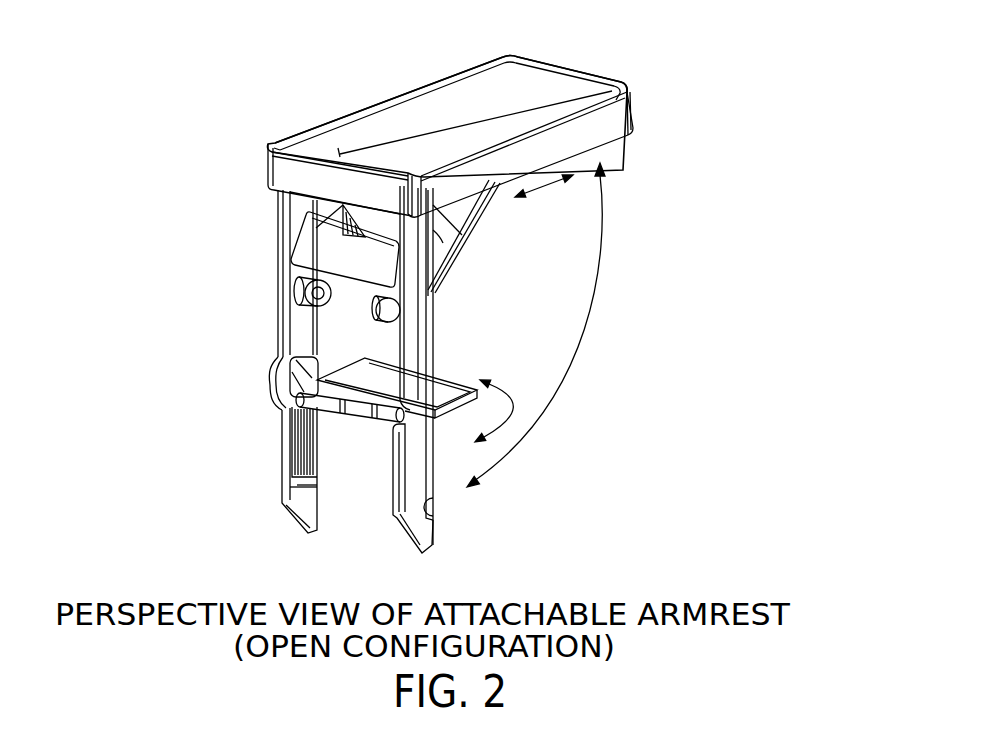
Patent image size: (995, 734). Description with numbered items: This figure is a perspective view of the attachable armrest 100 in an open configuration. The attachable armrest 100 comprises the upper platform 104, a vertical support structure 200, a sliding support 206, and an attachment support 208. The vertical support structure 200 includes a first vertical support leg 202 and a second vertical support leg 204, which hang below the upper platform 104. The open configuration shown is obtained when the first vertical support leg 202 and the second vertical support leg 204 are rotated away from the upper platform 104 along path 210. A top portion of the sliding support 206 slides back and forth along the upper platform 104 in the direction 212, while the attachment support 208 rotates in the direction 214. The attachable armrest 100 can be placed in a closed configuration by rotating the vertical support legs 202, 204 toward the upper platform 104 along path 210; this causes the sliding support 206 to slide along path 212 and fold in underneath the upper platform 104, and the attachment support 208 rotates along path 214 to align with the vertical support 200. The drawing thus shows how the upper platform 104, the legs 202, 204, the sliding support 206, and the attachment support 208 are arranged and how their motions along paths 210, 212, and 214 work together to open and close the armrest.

The attachable armrest 100 is at (222, 104).
The upper platform 104 is at (577, 80).
The vertical support structure 200 is at (280, 257).
The first vertical support leg 202 is at (287, 512).
The second vertical support leg 204 is at (418, 532).
The sliding support 206 is at (468, 210).
The attachment support 208 is at (495, 360).
The path 210 is at (597, 307).
The direction 212 is at (540, 187).
The direction 214 is at (505, 410).